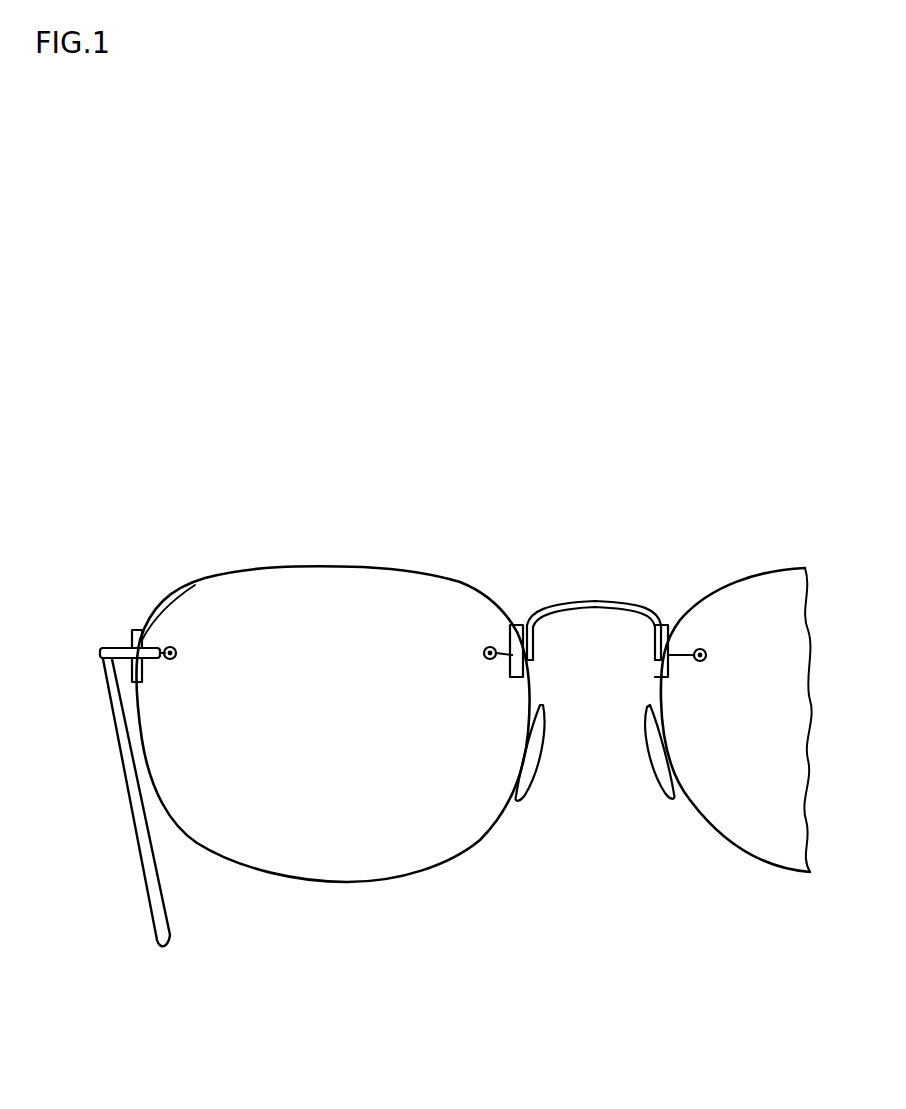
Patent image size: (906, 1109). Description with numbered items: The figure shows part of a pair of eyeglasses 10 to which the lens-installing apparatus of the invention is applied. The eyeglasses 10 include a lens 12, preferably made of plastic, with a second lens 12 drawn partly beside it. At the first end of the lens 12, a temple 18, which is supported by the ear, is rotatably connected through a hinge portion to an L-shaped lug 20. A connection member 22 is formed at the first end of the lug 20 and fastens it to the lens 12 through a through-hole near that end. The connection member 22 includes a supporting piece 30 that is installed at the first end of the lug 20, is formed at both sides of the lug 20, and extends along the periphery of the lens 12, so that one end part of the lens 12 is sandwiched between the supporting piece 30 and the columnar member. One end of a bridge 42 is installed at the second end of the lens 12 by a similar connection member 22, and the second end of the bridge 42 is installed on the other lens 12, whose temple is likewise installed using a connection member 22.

The eyeglasses 10 is at (234, 330).
The lens 12 is at (333, 588).
The temple 18 is at (150, 853).
The L-shaped lug 20 is at (118, 646).
The connection member 22 is at (160, 640).
The supporting piece 30 is at (134, 628).
The bridge 42 is at (590, 605).